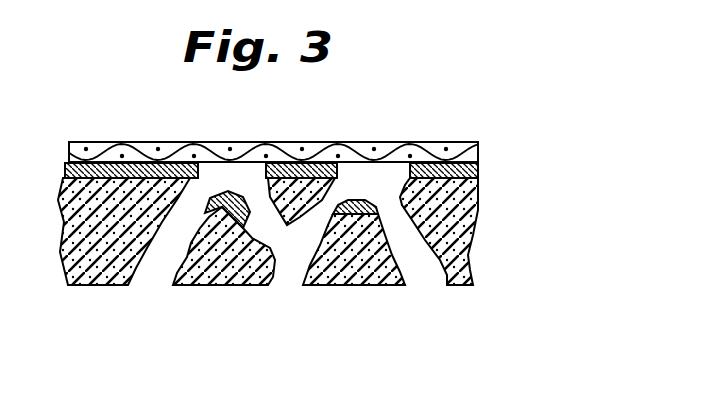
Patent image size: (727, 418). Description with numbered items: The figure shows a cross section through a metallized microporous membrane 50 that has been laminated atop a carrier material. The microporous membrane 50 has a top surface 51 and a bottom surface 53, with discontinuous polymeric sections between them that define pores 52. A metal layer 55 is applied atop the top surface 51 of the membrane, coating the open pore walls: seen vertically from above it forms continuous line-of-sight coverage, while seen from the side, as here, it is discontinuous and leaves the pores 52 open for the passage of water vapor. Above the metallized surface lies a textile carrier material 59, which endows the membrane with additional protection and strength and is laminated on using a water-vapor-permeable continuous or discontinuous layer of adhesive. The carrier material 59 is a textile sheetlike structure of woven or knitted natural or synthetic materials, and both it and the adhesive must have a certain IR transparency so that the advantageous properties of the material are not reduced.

The microporous membrane 50 is at (463, 243).
The top surface 51 is at (63, 175).
The pores 52 is at (418, 258).
The bottom surface 53 is at (98, 285).
The metal layer 55 is at (478, 165).
The textile carrier material 59 is at (455, 145).